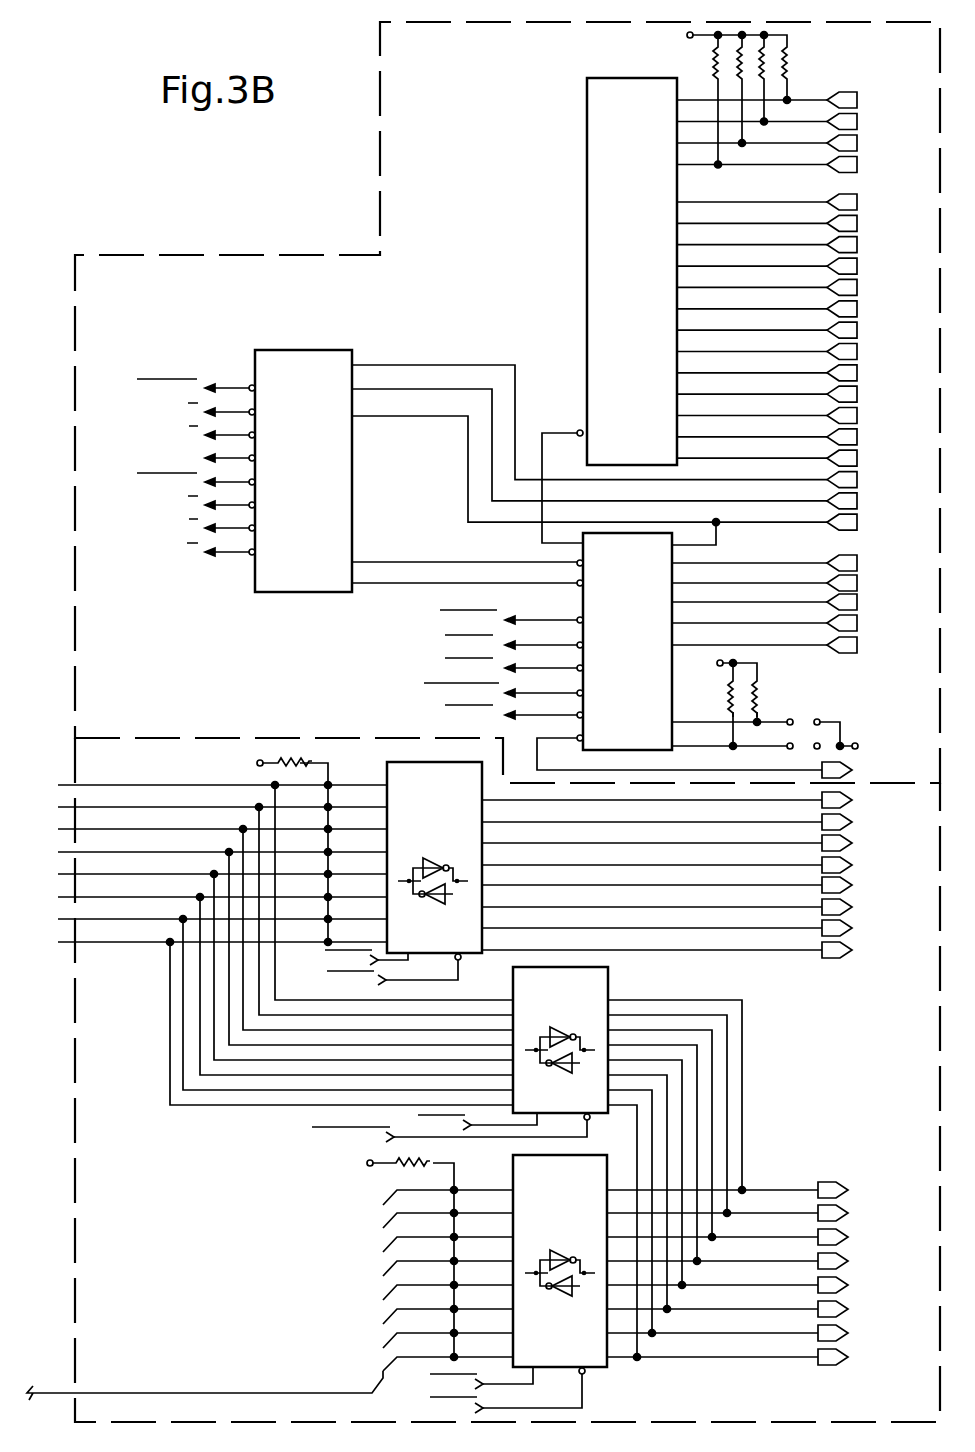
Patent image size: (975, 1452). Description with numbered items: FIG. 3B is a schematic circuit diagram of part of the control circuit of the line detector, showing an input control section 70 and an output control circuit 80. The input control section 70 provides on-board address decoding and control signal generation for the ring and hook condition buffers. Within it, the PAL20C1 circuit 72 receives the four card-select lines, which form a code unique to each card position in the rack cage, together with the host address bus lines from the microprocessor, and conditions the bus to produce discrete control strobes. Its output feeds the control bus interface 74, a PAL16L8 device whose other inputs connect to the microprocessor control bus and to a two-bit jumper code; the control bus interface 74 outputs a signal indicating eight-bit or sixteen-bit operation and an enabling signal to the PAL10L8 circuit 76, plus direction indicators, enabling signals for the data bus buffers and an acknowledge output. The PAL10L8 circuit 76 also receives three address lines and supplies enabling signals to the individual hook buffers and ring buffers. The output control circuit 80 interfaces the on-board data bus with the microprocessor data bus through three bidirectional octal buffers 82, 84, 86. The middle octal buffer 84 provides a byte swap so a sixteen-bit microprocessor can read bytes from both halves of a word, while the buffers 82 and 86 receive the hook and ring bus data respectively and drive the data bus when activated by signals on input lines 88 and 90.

The input control section 70 is at (425, 164).
The PAL20C1 circuit 72 is at (587, 153).
The control bus interface 74 is at (583, 602).
The PAL10L8 circuit 76 is at (329, 350).
The output control circuit 80 is at (125, 1205).
The bidirectional octal buffer 82 is at (387, 770).
The middle octal buffer 84 is at (608, 992).
The bidirectional octal buffer 86 is at (513, 1175).
The input line 88 is at (460, 975).
The input line 90 is at (584, 1400).